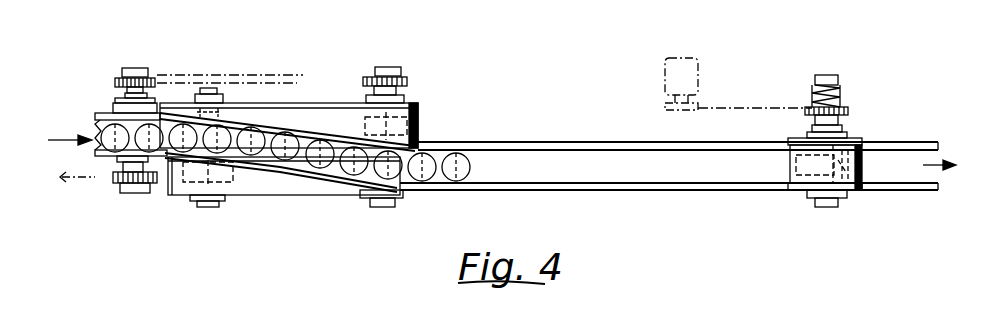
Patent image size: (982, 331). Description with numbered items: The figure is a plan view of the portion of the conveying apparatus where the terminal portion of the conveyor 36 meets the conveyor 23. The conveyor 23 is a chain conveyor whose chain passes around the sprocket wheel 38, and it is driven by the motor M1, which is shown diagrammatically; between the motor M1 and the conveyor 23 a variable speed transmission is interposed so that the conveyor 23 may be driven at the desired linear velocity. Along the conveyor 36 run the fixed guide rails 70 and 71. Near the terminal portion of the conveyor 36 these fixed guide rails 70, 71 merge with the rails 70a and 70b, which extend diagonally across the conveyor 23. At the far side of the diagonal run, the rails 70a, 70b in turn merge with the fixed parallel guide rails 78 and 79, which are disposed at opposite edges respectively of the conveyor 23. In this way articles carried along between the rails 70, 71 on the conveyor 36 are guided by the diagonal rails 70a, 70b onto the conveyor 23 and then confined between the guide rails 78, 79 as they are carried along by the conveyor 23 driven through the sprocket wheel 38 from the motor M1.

The fixed guide rail 70 is at (105, 103).
The fixed guide rail 71 is at (110, 167).
The rail 70a is at (282, 125).
The rail 70b is at (317, 167).
The conveyor 36 is at (327, 120).
The fixed parallel guide rail 78 is at (537, 125).
The fixed parallel guide rail 79 is at (485, 188).
The conveyor 23 is at (669, 168).
The sprocket wheel 38 is at (847, 190).
The motor M1 is at (725, 62).